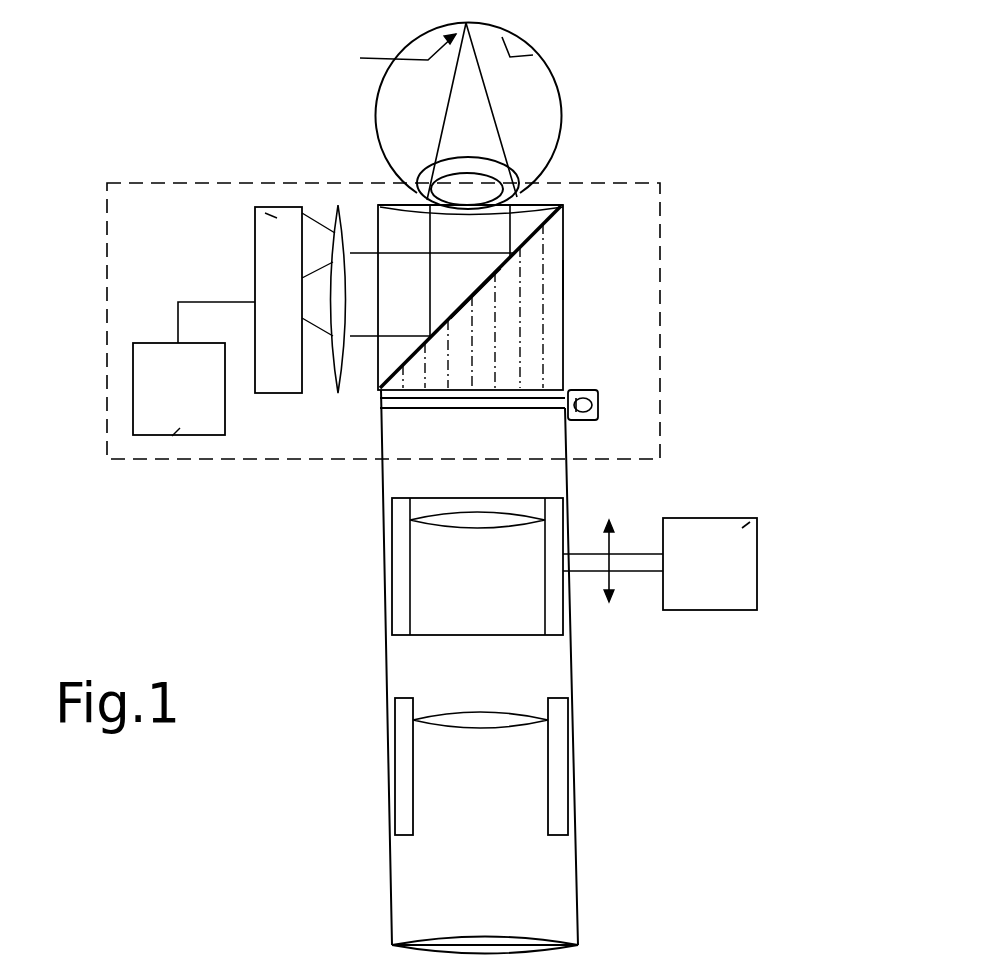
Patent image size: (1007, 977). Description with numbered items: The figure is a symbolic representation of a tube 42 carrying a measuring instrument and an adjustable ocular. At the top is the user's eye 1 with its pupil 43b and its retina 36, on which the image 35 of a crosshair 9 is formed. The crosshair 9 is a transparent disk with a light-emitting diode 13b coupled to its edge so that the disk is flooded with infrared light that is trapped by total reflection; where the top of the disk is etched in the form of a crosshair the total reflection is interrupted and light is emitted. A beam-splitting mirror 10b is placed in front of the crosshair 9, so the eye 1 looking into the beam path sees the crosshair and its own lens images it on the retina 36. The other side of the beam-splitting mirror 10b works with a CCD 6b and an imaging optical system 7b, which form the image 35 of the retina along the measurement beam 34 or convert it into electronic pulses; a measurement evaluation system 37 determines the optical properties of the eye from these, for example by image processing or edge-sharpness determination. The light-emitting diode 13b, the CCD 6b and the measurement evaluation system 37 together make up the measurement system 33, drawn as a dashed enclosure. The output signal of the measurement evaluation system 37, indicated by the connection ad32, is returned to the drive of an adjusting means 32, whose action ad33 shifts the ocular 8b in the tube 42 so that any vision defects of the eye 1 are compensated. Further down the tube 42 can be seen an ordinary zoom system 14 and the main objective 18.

The user's eye 1 is at (567, 113).
The retina 36 is at (533, 54).
The image 35 is at (360, 58).
The pupil 43b is at (525, 170).
The crosshair 9 is at (568, 385).
The beam-splitting mirror 10b is at (567, 206).
The tube 42 is at (568, 277).
The measurement beam 34 is at (567, 323).
The light-emitting diode 13b is at (603, 400).
The ocular lens 8b is at (530, 517).
The adjusting means 32 is at (660, 564).
The adjustment connection of drive ad33 is at (757, 520).
The zoom system 14 is at (530, 712).
The main objective 18 is at (535, 940).
The imaging optics 7b is at (287, 207).
The CCD 6b is at (253, 207).
The measurement evaluation system 37 is at (194, 368).
The measurement system 33 is at (188, 257).
The control connection of control unit ad32 is at (170, 438).